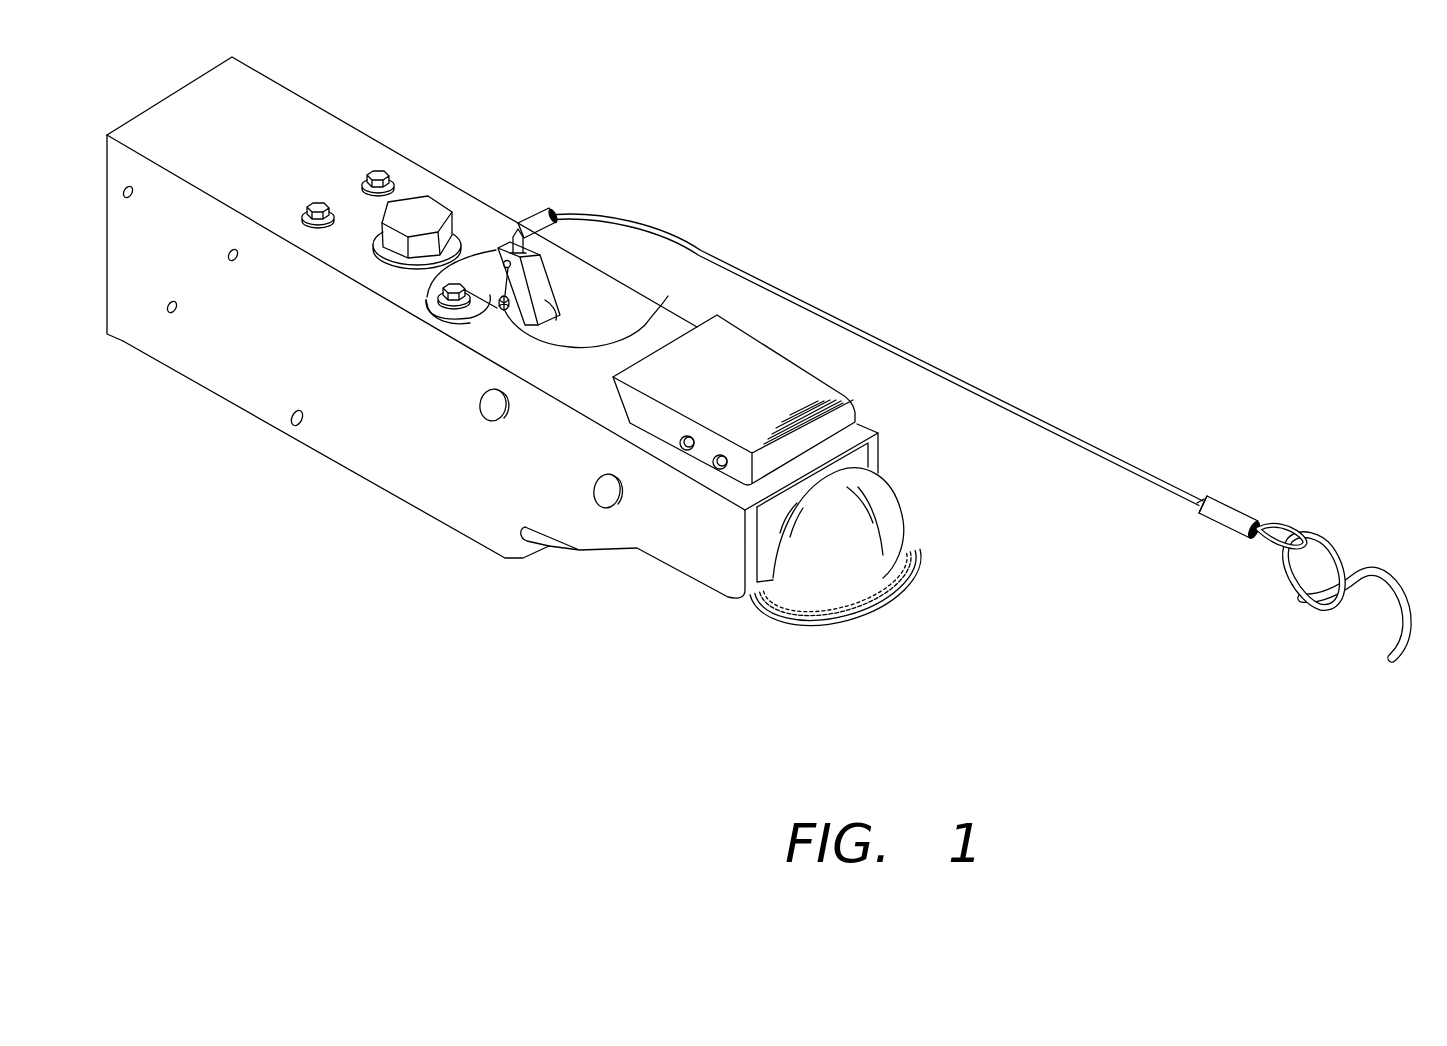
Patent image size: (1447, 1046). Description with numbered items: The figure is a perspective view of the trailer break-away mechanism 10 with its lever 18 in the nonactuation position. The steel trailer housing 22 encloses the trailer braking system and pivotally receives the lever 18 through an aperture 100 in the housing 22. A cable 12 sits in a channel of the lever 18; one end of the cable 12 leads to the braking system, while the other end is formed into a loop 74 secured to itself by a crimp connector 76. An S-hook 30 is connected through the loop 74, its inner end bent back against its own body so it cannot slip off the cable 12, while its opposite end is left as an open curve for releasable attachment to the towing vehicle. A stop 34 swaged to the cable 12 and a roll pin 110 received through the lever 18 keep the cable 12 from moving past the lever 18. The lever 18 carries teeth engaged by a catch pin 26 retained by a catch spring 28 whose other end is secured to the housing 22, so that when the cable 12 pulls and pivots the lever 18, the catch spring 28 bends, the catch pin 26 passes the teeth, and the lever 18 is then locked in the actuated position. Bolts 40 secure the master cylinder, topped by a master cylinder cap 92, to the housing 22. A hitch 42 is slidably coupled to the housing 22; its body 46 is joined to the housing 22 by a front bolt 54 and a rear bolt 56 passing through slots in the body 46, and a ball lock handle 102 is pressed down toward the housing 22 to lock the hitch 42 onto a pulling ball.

The trailer break-away mechanism 10 is at (716, 129).
The cable 12 is at (943, 377).
The lever 18 is at (540, 288).
The trailer housing 22 is at (481, 523).
The catch pin 26 is at (660, 310).
The catch spring 28 is at (462, 285).
The S-hook 30 is at (1380, 572).
The stop 34 is at (540, 208).
The bolts 40 is at (317, 203).
The hitch 42 is at (726, 630).
The body of the hitch 46 is at (883, 510).
The front bolt 54 is at (603, 497).
The rear bolt 56 is at (492, 412).
The loop 74 is at (1285, 526).
The crimp connector 76 is at (1230, 510).
The master cylinder cap 92 is at (413, 212).
The aperture 100 is at (552, 306).
The ball lock handle 102 is at (762, 360).
The roll pin 110 is at (505, 308).